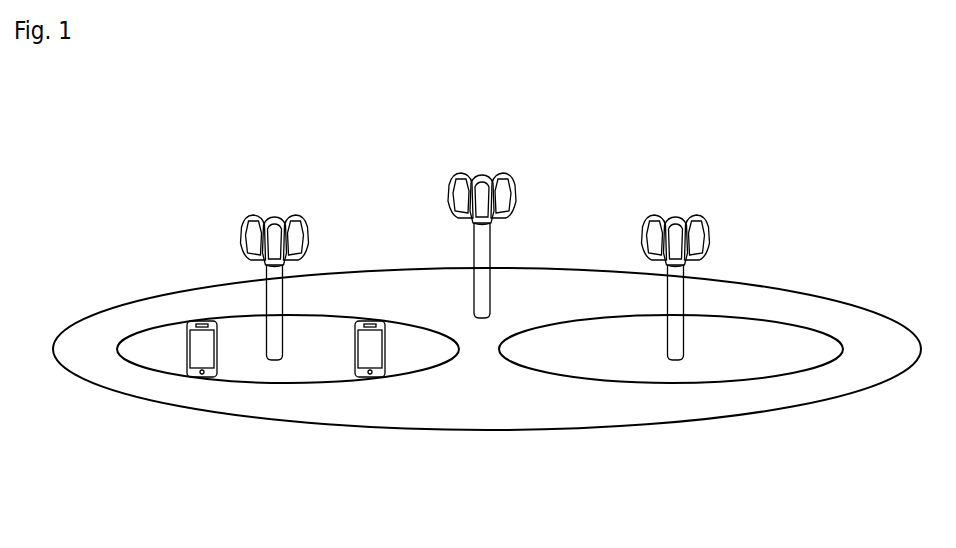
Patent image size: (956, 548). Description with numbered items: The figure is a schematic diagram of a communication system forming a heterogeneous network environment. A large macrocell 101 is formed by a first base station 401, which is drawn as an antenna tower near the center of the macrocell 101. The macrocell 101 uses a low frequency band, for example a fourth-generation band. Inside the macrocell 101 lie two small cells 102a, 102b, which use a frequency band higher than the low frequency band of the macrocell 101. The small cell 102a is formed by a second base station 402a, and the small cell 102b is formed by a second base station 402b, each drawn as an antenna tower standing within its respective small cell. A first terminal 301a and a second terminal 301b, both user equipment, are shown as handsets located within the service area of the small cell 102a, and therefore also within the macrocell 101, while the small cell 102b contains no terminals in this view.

The macrocell 101 is at (848, 263).
The small cell 102a is at (338, 386).
The small cell 102b is at (753, 383).
The first base station 401 is at (505, 177).
The second base station 402a is at (277, 367).
The second base station 402b is at (675, 365).
The first terminal 301a is at (203, 320).
The second terminal 301b is at (372, 320).